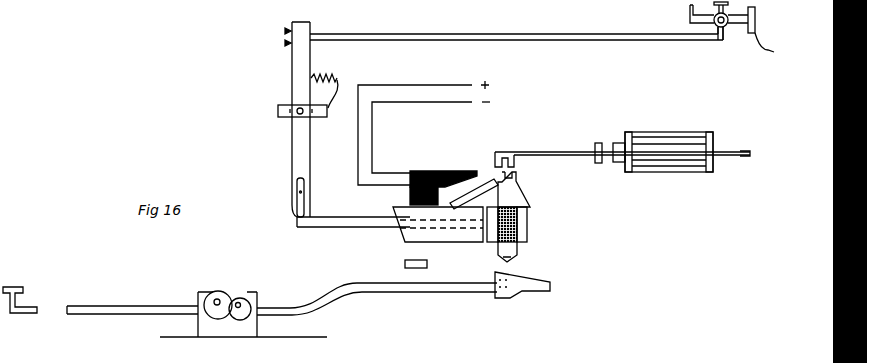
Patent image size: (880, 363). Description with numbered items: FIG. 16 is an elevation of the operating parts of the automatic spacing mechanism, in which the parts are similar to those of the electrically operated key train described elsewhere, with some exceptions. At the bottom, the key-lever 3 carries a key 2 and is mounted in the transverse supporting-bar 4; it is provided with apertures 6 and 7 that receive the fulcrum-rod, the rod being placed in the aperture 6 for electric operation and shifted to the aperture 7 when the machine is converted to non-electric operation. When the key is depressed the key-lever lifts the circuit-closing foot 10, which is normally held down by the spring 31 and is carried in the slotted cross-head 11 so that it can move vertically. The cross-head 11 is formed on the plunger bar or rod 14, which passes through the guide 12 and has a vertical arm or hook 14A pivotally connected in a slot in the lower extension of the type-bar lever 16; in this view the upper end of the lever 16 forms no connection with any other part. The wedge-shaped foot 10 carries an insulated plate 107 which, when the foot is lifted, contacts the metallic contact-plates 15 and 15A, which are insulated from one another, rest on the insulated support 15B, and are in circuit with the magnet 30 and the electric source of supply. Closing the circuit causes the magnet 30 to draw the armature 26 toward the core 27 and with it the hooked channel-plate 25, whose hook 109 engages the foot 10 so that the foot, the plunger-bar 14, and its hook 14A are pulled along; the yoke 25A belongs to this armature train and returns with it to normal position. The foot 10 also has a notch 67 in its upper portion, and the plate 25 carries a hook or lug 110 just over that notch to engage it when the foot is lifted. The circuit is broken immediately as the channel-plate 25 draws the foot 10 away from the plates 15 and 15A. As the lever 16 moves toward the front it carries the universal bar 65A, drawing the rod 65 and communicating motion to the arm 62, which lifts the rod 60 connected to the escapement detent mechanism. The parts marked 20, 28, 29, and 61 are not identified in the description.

The key-lever keys 2 is at (17, 286).
The key-lever 3 is at (118, 309).
The supporting-bar 4 is at (257, 330).
The aperture 6 is at (216, 299).
The aperture 7 is at (243, 303).
The circuit-closing foot 10 is at (520, 192).
The slotted cross-head 11 is at (527, 232).
The guide 12 is at (455, 242).
The plunger bar 14 is at (312, 228).
The vertical arm 14A is at (305, 215).
The contact-plate 15 is at (420, 170).
The contact-plate 15A is at (410, 186).
The insulated support 15B is at (410, 196).
The type-bar lever 16 is at (302, 63).
The bracket 20 is at (278, 110).
The hooked channel-plate 25 is at (584, 150).
The yoke 25A is at (724, 150).
The armature 26 is at (598, 163).
The core 27 is at (620, 143).
The negative lead 28 is at (431, 137).
The positive lead 29 is at (408, 85).
The magnet 30 is at (670, 172).
The spring 31 is at (517, 212).
The rod 60 is at (690, 13).
The pipe 61 is at (703, 22).
The arm 62 is at (723, 33).
The rod 65 is at (402, 38).
The universal bar 65A is at (285, 33).
The notch 67 is at (514, 175).
The plate 107 is at (489, 186).
The hook 109 is at (503, 156).
The hook or lug 110 is at (527, 151).